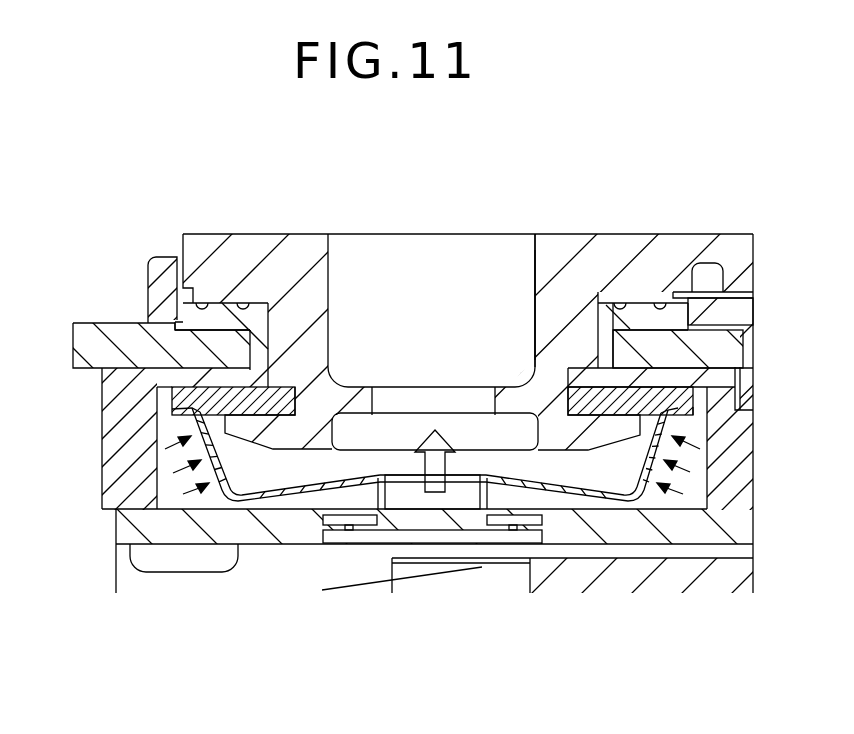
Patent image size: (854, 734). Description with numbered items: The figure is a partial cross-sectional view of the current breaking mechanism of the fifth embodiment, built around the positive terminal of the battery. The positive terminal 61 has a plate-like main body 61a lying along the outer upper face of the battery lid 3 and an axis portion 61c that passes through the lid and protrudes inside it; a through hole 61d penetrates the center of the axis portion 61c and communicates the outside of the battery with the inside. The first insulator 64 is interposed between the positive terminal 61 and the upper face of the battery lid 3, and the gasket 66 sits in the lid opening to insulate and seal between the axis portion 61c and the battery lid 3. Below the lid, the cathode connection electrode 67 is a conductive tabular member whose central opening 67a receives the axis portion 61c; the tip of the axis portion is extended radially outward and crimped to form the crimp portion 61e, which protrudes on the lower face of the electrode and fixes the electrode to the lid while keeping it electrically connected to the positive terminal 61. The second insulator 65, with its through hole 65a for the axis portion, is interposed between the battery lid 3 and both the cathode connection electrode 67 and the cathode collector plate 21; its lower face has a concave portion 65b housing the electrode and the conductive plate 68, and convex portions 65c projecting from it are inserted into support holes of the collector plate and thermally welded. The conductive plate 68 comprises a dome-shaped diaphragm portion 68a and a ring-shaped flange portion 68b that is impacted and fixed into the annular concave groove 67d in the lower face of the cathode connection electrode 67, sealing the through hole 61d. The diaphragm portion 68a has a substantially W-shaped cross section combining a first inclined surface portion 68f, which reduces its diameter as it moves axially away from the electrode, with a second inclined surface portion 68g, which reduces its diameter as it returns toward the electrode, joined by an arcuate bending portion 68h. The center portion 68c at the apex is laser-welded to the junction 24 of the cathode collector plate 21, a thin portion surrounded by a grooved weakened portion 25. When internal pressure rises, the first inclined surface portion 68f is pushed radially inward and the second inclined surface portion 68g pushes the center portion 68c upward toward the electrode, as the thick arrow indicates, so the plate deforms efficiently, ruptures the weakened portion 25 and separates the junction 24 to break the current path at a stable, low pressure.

The battery lid 3 is at (110, 320).
The first insulator 64 is at (157, 272).
The gasket 66 is at (227, 303).
The cathode connection electrode 67 is at (280, 385).
The opening 67a is at (308, 395).
The annular concave groove 67d is at (192, 408).
The positive terminal 61 is at (684, 234).
The main body 61a is at (612, 265).
The axis portion 61c is at (534, 345).
The through hole 61d is at (441, 330).
The crimp portion 61e is at (283, 520).
The second insulator 65 is at (120, 467).
The through hole 65a is at (583, 378).
The concave portion 65b is at (730, 470).
The convex portion 65c is at (142, 552).
The cathode collector plate 21 is at (123, 523).
The junction 24 is at (418, 518).
The weakened portion 25 is at (349, 530).
The conductive plate 68 is at (425, 556).
The diaphragm portion 68a is at (589, 556).
The flange portion 68b is at (180, 423).
The center portion 68c is at (468, 505).
The first inclined surface portion 68f is at (683, 470).
The second inclined surface portion 68g is at (570, 503).
The bending portion 68h is at (660, 425).